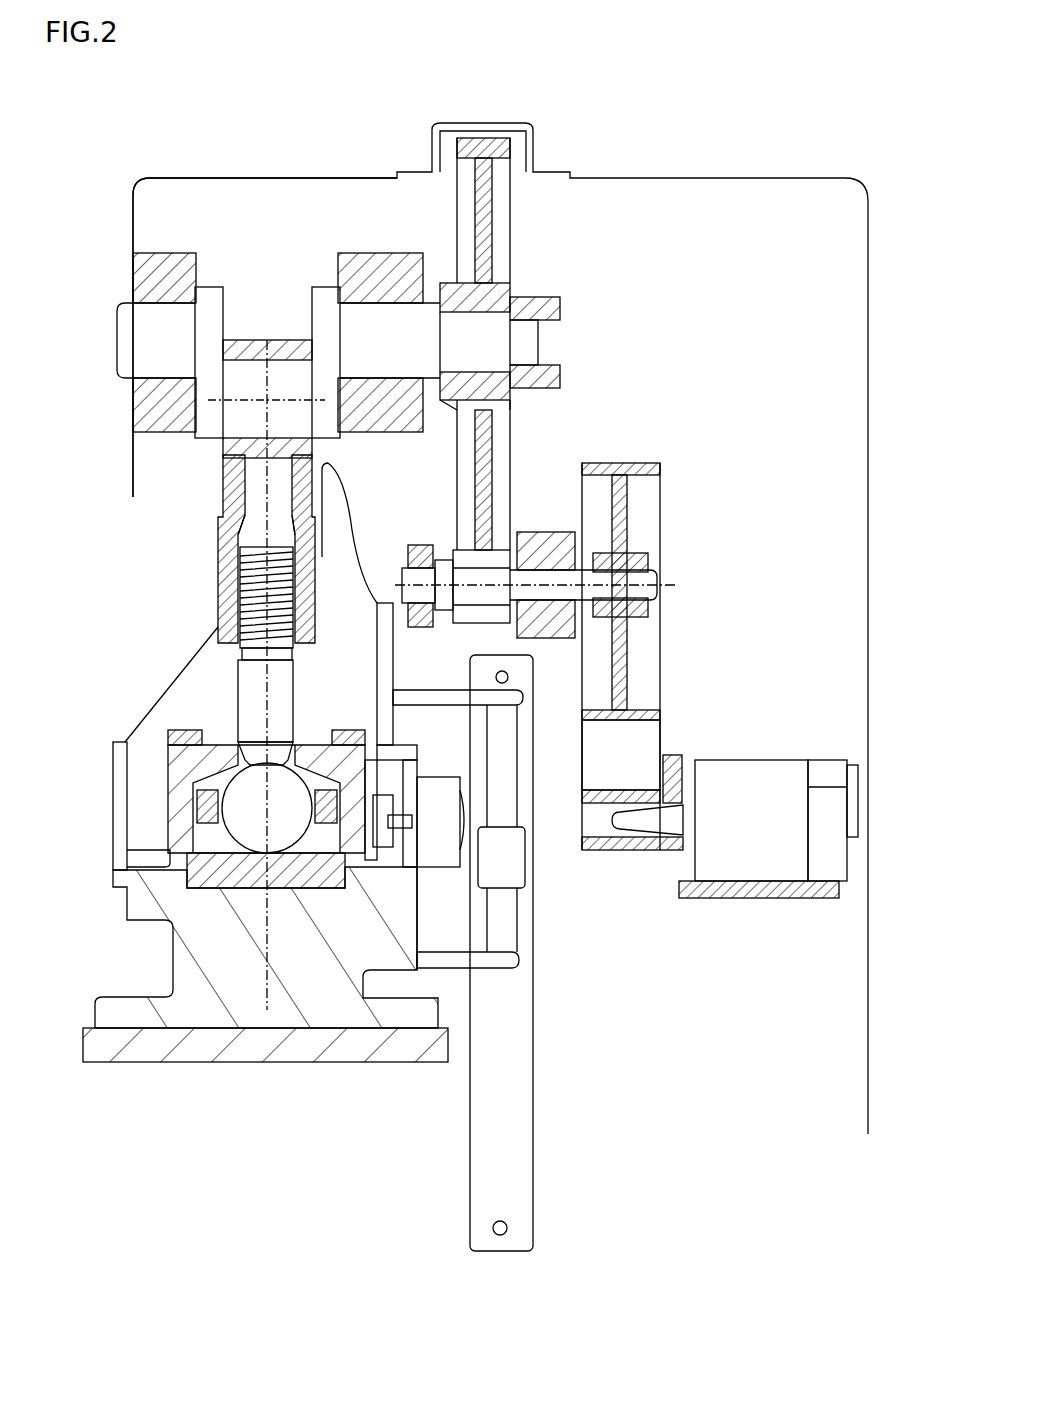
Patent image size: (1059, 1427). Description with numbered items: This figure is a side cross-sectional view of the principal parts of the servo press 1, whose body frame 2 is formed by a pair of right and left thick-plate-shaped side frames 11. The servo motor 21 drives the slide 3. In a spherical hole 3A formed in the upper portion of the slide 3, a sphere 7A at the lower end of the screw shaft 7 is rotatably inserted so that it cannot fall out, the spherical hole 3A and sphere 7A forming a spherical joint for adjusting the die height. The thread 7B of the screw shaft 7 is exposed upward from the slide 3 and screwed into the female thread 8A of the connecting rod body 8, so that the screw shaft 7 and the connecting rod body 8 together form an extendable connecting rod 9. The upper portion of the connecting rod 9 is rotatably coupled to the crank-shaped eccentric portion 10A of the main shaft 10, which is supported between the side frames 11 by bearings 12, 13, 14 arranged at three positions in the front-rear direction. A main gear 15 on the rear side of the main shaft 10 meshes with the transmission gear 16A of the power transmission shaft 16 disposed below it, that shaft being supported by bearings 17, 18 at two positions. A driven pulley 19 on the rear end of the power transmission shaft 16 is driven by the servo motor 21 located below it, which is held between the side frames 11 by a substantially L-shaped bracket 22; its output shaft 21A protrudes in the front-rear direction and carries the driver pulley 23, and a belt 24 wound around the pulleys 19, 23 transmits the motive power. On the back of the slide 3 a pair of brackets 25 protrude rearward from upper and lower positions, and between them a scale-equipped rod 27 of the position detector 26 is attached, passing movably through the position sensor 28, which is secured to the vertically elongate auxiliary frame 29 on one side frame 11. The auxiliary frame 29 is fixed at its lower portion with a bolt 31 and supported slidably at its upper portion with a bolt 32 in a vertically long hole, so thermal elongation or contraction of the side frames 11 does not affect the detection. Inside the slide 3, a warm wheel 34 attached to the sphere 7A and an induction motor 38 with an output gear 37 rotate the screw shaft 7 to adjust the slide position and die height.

The servo press 1 is at (742, 90).
The body frame 2 is at (795, 198).
The side frame 11 is at (795, 198).
The slide 3 is at (130, 900).
The spherical hole 3A is at (245, 858).
The screw shaft 7 is at (250, 678).
The sphere 7A is at (245, 792).
The thread 7B is at (248, 601).
The connecting rod body 8 is at (230, 619).
The female thread 8A is at (248, 579).
The connecting rod 9 is at (110, 622).
The main shaft 10 is at (130, 346).
The eccentric portion 10A is at (256, 365).
The bearing 12 is at (165, 262).
The bearing 13 is at (375, 262).
The bearing 14 is at (535, 300).
The main gear 15 is at (505, 436).
The power transmission shaft 16 is at (650, 576).
The transmission gear 16A is at (470, 622).
The bearing 17 is at (418, 548).
The bearing 18 is at (543, 540).
The pulley 19 is at (645, 516).
The servo motor 21 is at (762, 760).
The output shaft 21A is at (633, 855).
The bracket 22 is at (753, 898).
The pulley 23 is at (590, 855).
The belt 24 is at (650, 736).
The bracket 25 is at (445, 706).
The position detector 26 is at (552, 948).
The rod 27 is at (520, 770).
The position sensor 28 is at (524, 875).
The auxiliary frame 29 is at (532, 1100).
The bolt 31 is at (500, 1236).
The bolt 32 is at (510, 677).
The warm wheel 34 is at (185, 844).
The output gear 37 is at (386, 848).
The induction motor 38 is at (442, 850).